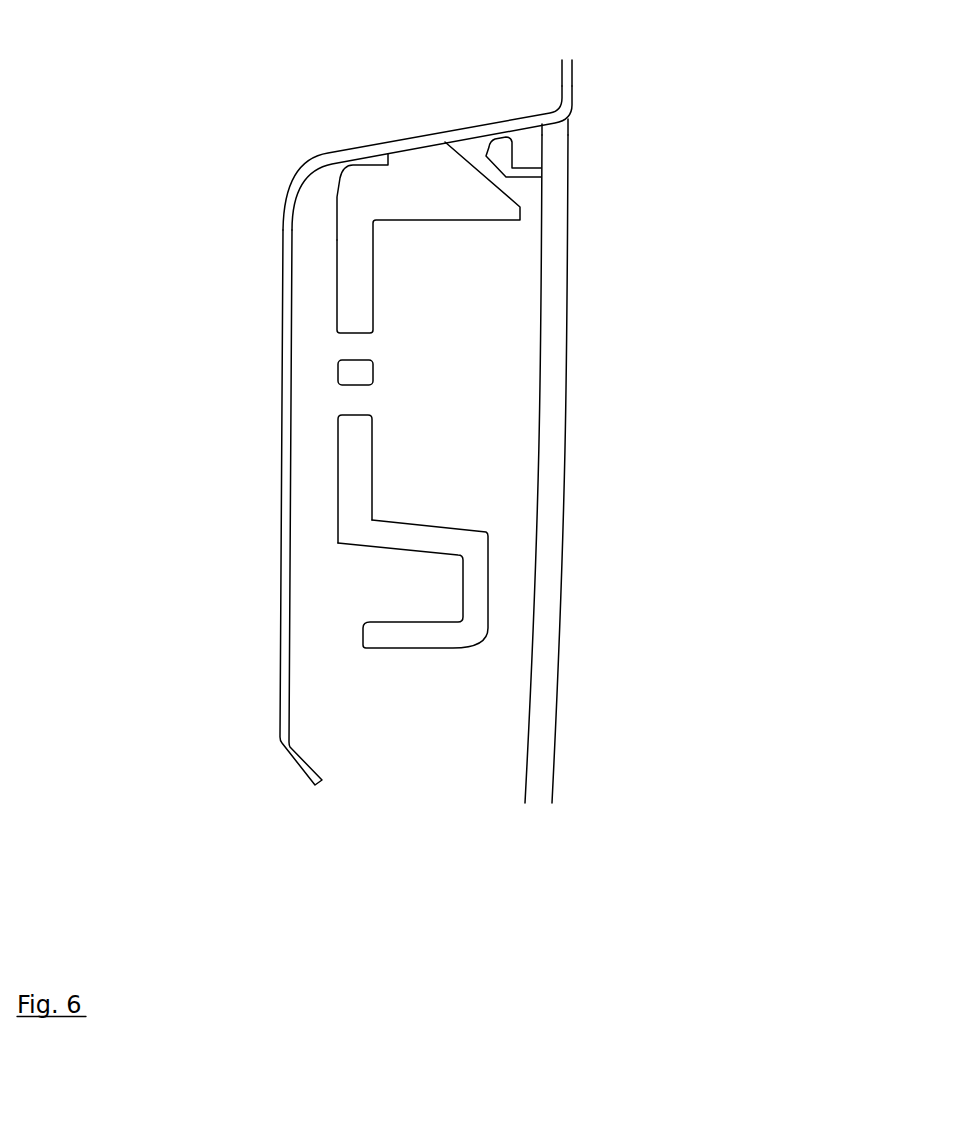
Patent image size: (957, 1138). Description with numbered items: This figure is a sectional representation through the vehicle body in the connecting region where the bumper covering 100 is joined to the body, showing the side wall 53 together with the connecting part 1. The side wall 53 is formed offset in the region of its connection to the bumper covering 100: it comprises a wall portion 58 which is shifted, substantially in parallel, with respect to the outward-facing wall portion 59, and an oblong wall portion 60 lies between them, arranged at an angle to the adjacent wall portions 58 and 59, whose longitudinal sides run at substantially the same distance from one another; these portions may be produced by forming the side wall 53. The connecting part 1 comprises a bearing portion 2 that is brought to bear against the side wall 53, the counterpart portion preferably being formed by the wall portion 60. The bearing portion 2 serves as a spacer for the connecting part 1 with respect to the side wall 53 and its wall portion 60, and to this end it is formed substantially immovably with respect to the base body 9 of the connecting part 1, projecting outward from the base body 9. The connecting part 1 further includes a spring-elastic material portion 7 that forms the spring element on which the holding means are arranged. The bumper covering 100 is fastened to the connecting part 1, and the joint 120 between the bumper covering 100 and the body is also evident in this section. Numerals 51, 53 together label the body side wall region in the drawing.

The connecting part 1 is at (406, 548).
The bearing portion 2 is at (430, 178).
The spring-elastic material portion 7 is at (358, 372).
The base body 9 is at (356, 547).
The cover 51 is at (406, 129).
The side wall 53 is at (327, 156).
The wall portion 58 is at (280, 527).
The wall portion 59 is at (572, 72).
The wall portion 60 is at (386, 158).
The bumper covering 100 is at (562, 418).
The joint 120 is at (567, 123).